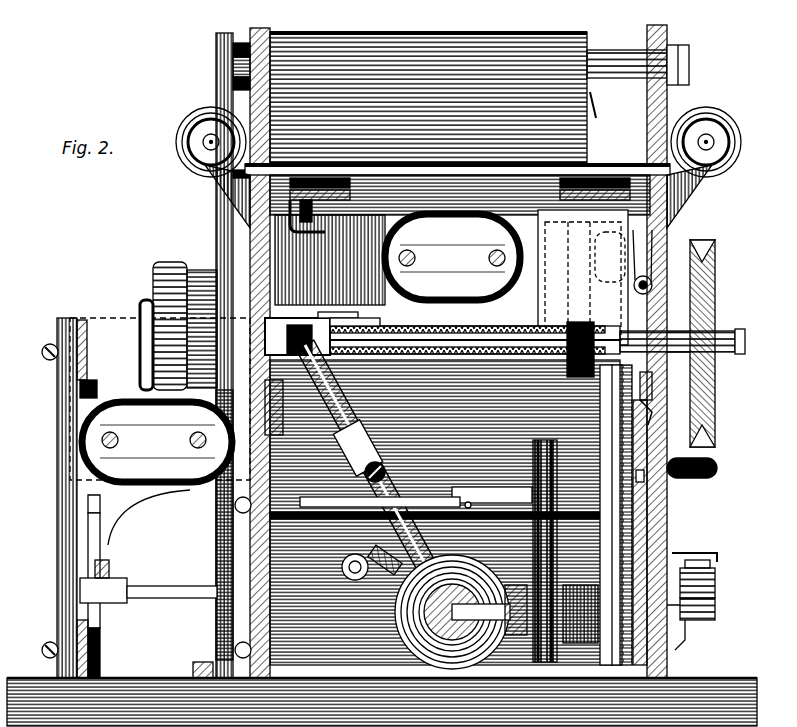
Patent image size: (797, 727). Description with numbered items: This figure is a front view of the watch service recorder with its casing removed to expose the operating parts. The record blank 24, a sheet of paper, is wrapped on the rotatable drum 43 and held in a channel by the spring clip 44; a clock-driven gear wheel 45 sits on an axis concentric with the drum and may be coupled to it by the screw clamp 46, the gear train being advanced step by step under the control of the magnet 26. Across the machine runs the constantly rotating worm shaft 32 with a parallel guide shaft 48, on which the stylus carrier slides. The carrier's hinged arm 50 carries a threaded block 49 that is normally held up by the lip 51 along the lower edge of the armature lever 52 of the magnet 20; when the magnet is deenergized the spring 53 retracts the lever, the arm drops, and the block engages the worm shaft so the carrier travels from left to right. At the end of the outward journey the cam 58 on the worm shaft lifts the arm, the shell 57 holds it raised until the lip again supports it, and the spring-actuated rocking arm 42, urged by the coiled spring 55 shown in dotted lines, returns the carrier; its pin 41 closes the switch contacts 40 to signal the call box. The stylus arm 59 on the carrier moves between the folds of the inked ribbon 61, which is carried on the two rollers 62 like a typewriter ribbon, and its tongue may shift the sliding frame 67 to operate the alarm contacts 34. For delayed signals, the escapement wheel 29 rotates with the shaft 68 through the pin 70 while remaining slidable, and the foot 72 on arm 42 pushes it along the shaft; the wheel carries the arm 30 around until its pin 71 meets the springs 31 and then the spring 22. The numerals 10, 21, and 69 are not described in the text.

The frame 10 is at (146, 498).
The magnet 20 is at (435, 290).
The block 21 is at (715, 600).
The spring 22 is at (718, 612).
The record blank 24 is at (437, 32).
The magnet 26 is at (170, 483).
The escapement wheel 29 is at (600, 390).
The arm 30 is at (645, 478).
The springs 31 is at (715, 578).
The worm shaft 32 is at (745, 342).
The contacts 34 is at (610, 257).
The switch contacts 40 is at (565, 551).
The pin 41 is at (383, 460).
The rocking arm 42 is at (376, 462).
The drum 43 is at (570, 655).
The spring clip 44 is at (590, 48).
The gear wheel 45 is at (230, 47).
The screw clamp 46 is at (197, 270).
The guide shaft 48 is at (470, 372).
The threaded block 49 is at (288, 407).
The hinged arm 50 is at (305, 318).
The lip 51 is at (362, 320).
The armature lever 52 is at (330, 260).
The spring 53 is at (648, 285).
The coiled spring 55 is at (338, 312).
The shell 57 is at (648, 385).
The cam 58 is at (655, 412).
The stylus arm 59 is at (322, 208).
The inked ribbon 61 is at (445, 195).
The rollers 62 is at (190, 117).
The sliding frame 67 is at (583, 277).
The shaft 68 is at (440, 500).
The link 69 is at (343, 440).
The pin 70 is at (470, 505).
The pin 71 is at (712, 478).
The foot 72 is at (372, 562).